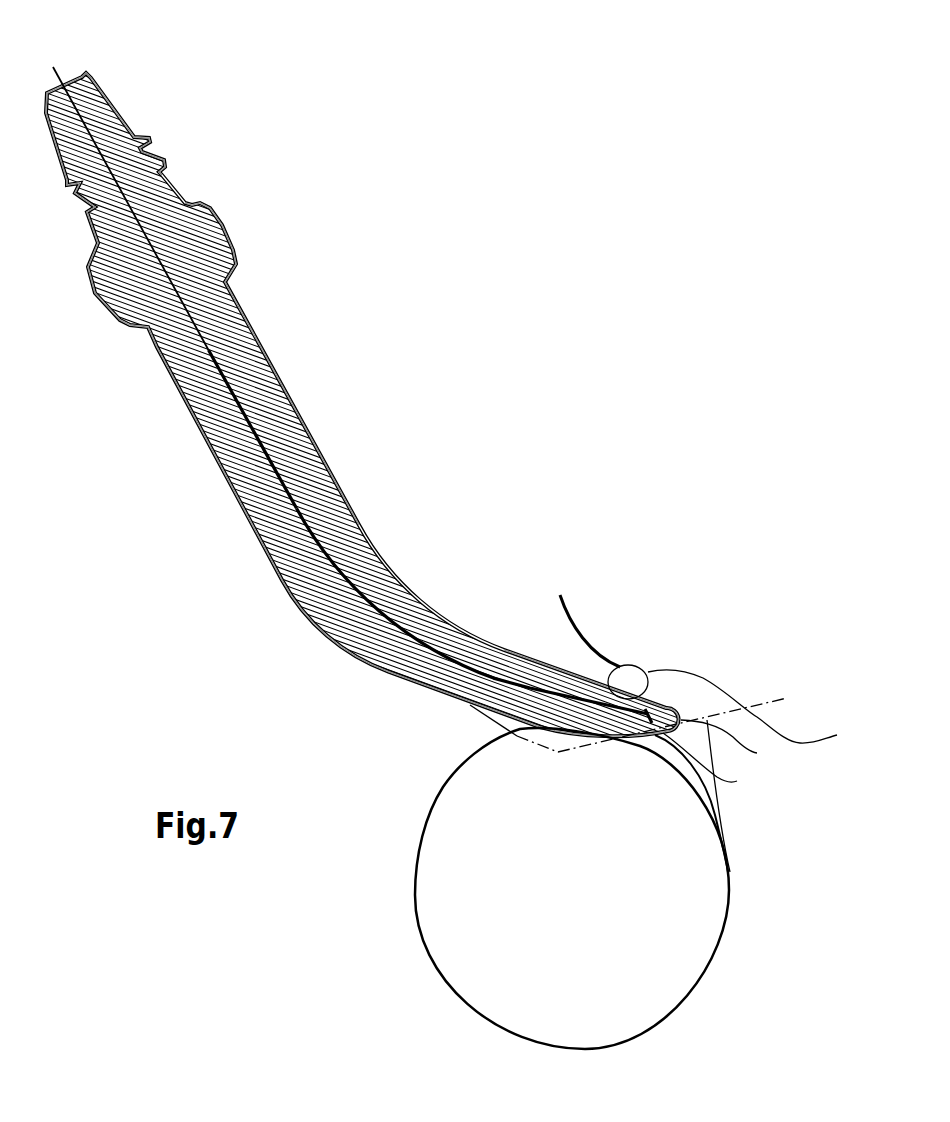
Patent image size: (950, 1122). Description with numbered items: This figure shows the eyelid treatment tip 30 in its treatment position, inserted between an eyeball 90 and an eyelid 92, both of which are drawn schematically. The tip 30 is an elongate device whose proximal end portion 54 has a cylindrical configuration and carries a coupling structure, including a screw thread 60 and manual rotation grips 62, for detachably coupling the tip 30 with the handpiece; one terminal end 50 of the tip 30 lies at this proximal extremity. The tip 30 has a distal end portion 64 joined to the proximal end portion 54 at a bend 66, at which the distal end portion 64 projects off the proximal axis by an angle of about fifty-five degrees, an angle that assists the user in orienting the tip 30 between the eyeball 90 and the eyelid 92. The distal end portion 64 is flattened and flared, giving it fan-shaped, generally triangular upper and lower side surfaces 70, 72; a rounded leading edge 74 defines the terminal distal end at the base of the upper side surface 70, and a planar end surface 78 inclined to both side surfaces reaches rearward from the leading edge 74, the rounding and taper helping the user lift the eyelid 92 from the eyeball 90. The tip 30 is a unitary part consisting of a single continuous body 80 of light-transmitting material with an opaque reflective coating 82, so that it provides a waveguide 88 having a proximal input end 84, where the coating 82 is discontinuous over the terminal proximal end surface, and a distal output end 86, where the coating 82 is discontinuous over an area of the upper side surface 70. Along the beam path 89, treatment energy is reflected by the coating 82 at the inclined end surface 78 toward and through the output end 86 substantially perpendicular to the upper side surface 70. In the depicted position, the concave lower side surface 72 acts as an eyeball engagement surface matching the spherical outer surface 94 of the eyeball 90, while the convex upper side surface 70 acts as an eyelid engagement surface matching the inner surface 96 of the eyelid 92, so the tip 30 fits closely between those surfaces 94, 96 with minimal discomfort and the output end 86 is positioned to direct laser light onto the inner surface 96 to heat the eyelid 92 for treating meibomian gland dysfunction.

The tip 30 is at (388, 292).
The terminal end 50 is at (49, 93).
The proximal end portion 54 is at (204, 438).
The screw thread 60 is at (154, 142).
The manual rotation grips 62 is at (243, 226).
The distal end portion 64 is at (473, 704).
The bend 66 is at (391, 681).
The upper side surface 70 is at (519, 653).
The lower side surface 72 is at (580, 737).
The rounded leading edge 74 is at (731, 742).
The planar end surface 78 is at (715, 764).
The body 80 is at (247, 358).
The opaque reflective coating 82 is at (288, 383).
The terminal proximal end surface 84 is at (76, 78).
The area at the upper side surface 86 is at (640, 704).
The waveguide 88 is at (289, 443).
The beam path 89 is at (298, 500).
The eyeball 90 is at (415, 905).
The eyelid 92 is at (703, 677).
The outer surface of the eyeball 94 is at (710, 808).
The inner surface of the eyelid 96 is at (585, 685).